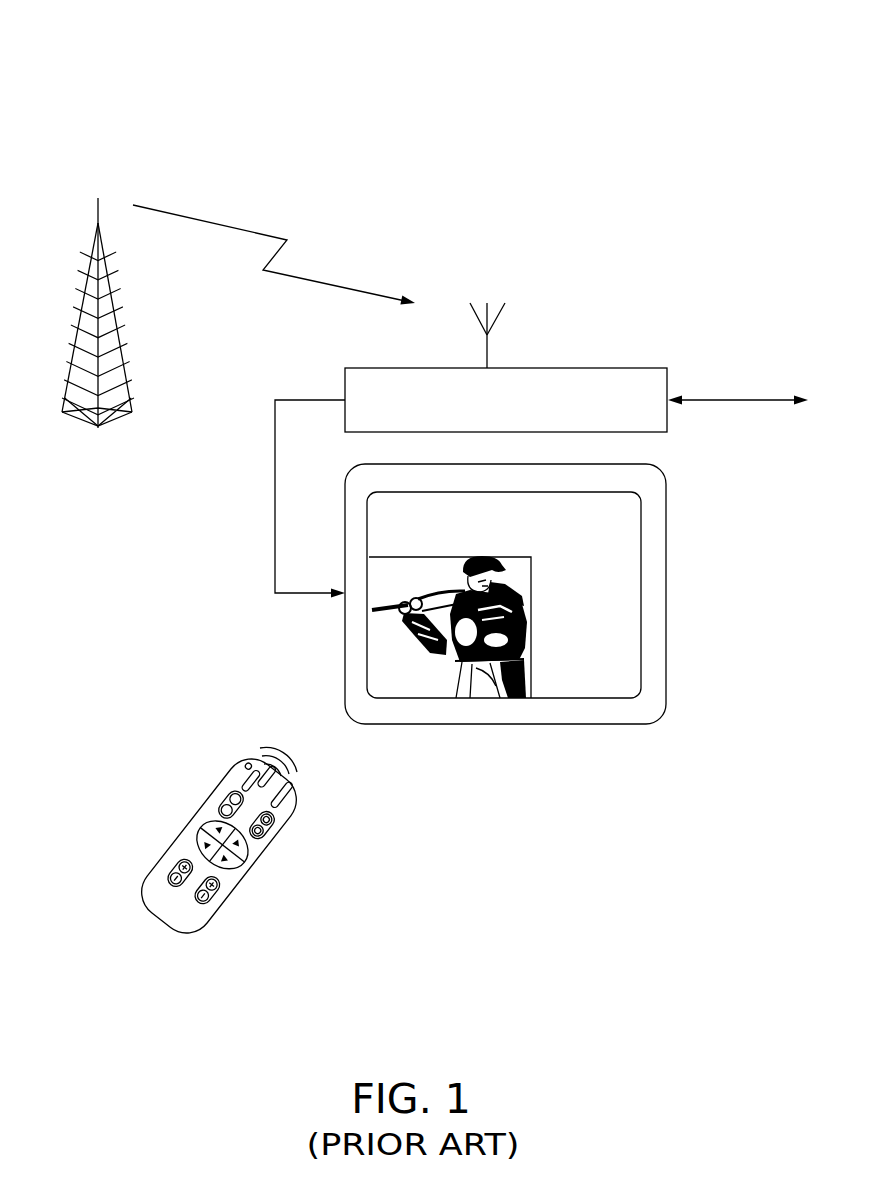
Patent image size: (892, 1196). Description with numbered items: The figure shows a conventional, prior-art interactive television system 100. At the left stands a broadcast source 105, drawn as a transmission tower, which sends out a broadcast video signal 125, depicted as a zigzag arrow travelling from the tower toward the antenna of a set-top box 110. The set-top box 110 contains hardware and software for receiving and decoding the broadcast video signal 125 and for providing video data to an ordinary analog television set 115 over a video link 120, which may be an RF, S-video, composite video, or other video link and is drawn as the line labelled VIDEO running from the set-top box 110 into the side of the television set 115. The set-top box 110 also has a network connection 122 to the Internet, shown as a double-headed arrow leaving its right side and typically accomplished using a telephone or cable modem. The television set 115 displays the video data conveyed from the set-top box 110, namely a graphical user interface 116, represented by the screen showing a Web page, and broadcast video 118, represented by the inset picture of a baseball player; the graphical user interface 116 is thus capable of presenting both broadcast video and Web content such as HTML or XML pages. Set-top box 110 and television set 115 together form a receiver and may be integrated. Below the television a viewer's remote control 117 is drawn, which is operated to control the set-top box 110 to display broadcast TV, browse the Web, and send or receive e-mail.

The interactive television system 100 is at (672, 72).
The broadcast source 105 is at (98, 214).
The set-top box 110 is at (619, 423).
The television set 115 is at (666, 607).
The graphical user interface 116 is at (598, 542).
The remote control 117 is at (157, 927).
The broadcast video 118 is at (392, 685).
The video link 120 is at (273, 476).
The network connection 122 is at (707, 402).
The broadcast video signal 125 is at (213, 222).